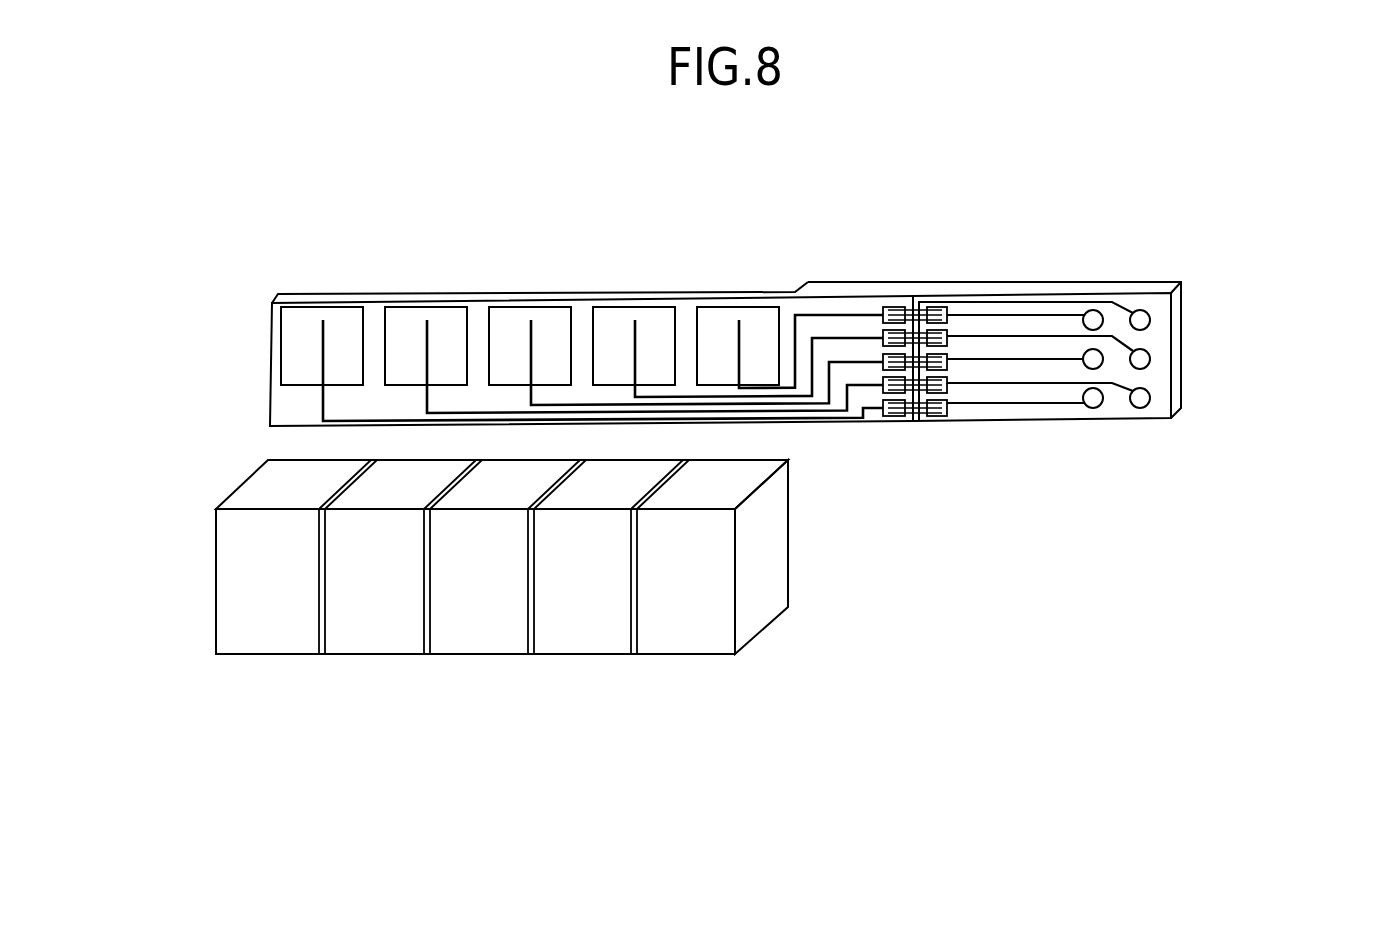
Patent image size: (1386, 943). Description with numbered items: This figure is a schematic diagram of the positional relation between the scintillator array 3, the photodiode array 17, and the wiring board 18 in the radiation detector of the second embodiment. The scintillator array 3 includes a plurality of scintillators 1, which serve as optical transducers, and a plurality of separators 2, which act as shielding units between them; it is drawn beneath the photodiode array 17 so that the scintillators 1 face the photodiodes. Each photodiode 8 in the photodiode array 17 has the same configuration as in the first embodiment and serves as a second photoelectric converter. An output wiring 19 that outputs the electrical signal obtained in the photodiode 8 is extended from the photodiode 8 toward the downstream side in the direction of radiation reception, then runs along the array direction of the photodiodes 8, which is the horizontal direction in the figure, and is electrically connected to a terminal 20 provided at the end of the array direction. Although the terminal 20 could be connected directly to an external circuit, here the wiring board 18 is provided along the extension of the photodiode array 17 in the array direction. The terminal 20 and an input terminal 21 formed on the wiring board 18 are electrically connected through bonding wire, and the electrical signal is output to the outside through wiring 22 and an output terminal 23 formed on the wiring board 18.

The scintillator 1 is at (270, 623).
The separator 2 is at (322, 610).
The scintillator array 3 is at (820, 580).
The photodiode 8 is at (345, 330).
The photodiode array 17 is at (886, 258).
The wiring board 18 is at (993, 283).
The output wiring 19 is at (323, 399).
The terminal 20 is at (886, 418).
The input terminal 21 is at (953, 412).
The wiring 22 is at (1022, 405).
The output terminal 23 is at (1143, 400).